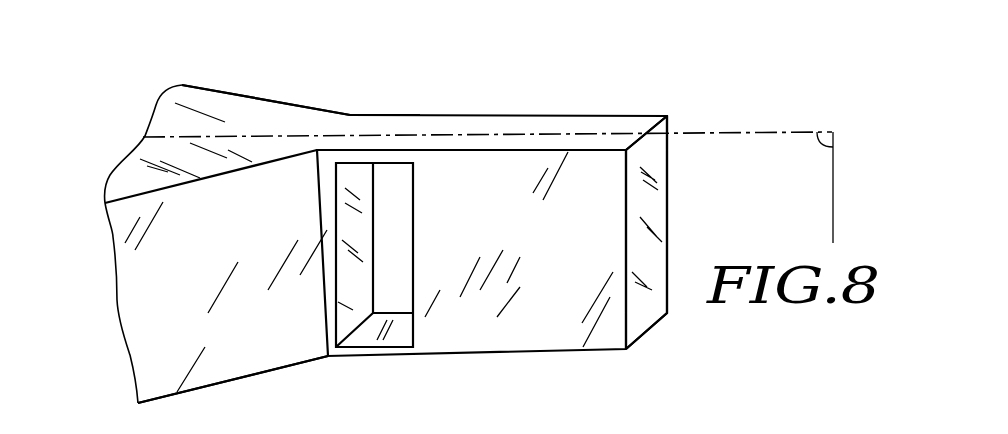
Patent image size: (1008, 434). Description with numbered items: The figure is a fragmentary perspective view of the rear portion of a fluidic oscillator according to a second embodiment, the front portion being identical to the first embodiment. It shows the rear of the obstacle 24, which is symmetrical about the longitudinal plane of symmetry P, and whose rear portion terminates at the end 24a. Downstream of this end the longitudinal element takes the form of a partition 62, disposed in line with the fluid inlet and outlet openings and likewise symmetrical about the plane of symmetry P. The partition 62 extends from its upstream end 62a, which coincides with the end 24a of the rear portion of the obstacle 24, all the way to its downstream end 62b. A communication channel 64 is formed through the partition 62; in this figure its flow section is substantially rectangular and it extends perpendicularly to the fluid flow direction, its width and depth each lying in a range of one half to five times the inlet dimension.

The obstacle 24 is at (140, 305).
The end of the rear portion of the obstacle 24a is at (323, 337).
The partition 62 is at (512, 115).
The upstream end of the partition 62a is at (328, 118).
The downstream end of the partition 62b is at (637, 125).
The communication channel 64 is at (389, 187).
The longitudinal plane of symmetry P is at (833, 139).